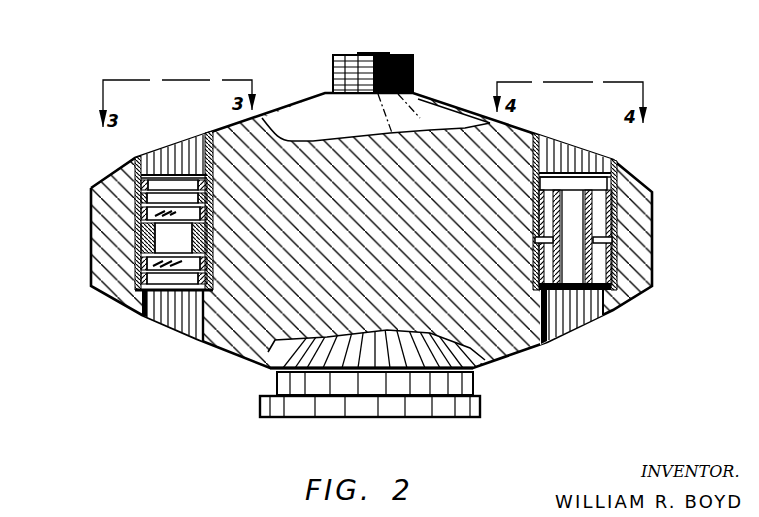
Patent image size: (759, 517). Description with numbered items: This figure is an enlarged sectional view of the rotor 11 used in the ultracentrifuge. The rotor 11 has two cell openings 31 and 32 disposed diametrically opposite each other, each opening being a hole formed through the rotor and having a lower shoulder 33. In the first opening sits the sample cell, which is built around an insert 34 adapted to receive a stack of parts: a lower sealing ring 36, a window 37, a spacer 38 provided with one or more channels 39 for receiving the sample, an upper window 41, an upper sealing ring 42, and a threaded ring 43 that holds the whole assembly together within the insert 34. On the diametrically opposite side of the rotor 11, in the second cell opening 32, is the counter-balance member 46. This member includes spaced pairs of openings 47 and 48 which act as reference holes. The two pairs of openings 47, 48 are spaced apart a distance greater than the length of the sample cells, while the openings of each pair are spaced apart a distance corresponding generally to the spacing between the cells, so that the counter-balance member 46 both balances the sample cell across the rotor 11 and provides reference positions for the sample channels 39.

The rotor 11 is at (434, 86).
The cell opening 31 is at (150, 143).
The cell opening 32 is at (547, 147).
The lower shoulder 33 is at (215, 330).
The insert 34 is at (140, 288).
The lower sealing ring 36 is at (213, 273).
The window 37 is at (210, 235).
The spacer 38 is at (212, 208).
The channels 39 is at (150, 260).
The upper window 41 is at (163, 240).
The upper sealing ring 42 is at (150, 200).
The threaded ring 43 is at (212, 187).
The counter-balance member 46 is at (610, 200).
The openings 47 is at (538, 243).
The openings 48 is at (610, 238).